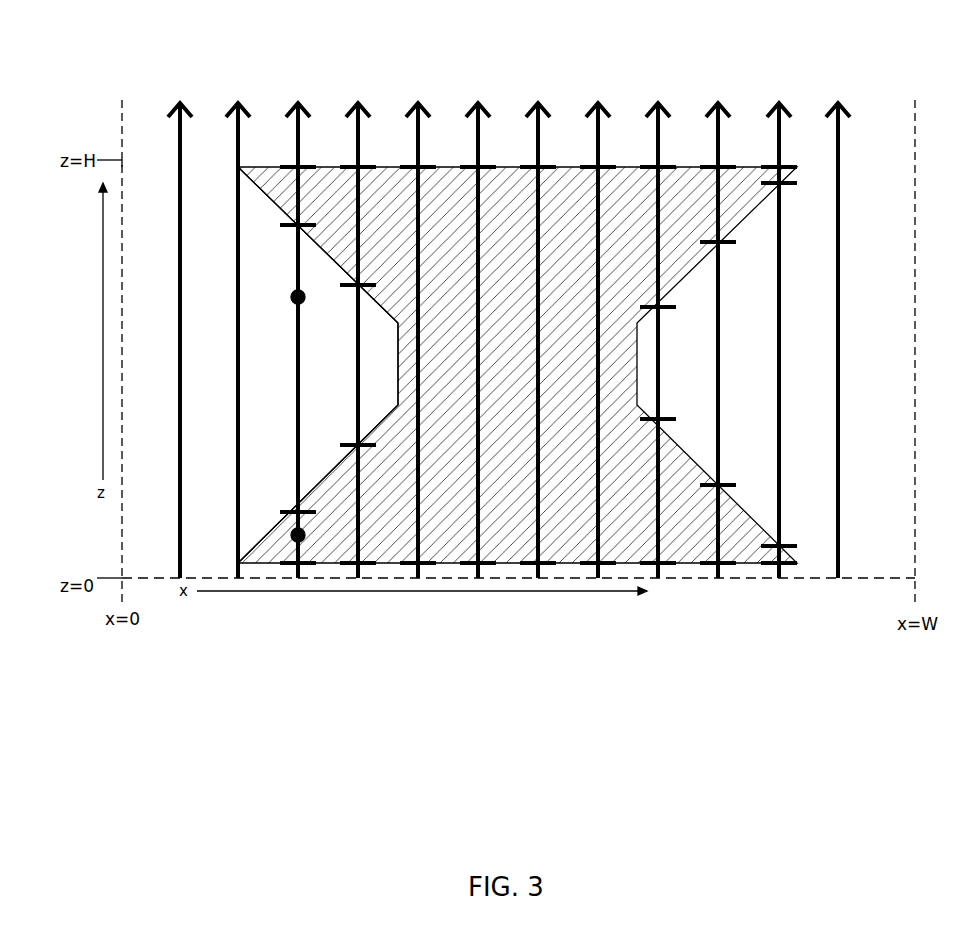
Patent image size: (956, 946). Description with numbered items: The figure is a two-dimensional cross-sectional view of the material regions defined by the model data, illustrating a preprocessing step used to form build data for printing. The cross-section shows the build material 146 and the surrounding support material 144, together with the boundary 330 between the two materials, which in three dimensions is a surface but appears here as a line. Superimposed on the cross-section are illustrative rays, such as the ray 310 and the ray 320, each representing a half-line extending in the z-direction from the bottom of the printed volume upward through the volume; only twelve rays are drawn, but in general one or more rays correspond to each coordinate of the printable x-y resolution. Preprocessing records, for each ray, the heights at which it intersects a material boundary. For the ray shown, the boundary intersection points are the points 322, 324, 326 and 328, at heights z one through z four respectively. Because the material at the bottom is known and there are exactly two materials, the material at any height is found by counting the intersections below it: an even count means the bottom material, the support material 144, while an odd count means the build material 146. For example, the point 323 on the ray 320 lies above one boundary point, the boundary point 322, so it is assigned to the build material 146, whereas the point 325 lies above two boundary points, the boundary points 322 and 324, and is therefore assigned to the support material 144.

The ray 310 is at (178, 102).
The ray 320 is at (296, 102).
The boundary intersection point 328 is at (282, 165).
The boundary intersection point 326 is at (290, 223).
The point 325 is at (292, 292).
The boundary 330 is at (396, 388).
The boundary intersection point 324 is at (282, 511).
The point 323 is at (292, 533).
The boundary intersection point 322 is at (282, 561).
The support material 144 is at (166, 411).
The build material 146 is at (522, 336).